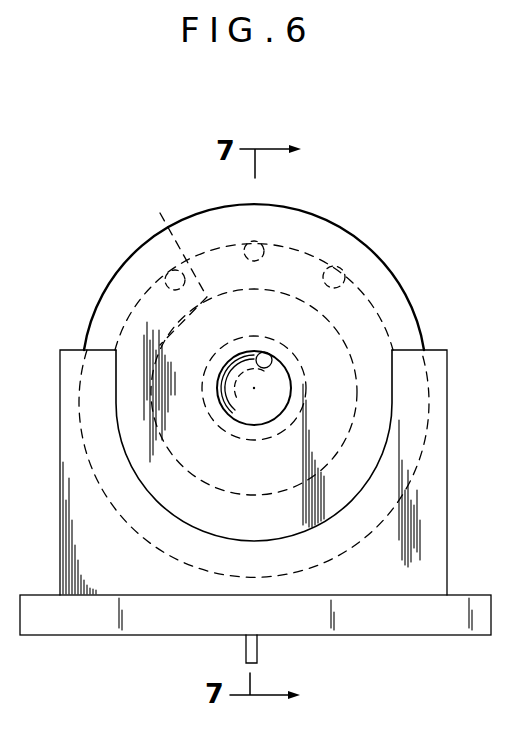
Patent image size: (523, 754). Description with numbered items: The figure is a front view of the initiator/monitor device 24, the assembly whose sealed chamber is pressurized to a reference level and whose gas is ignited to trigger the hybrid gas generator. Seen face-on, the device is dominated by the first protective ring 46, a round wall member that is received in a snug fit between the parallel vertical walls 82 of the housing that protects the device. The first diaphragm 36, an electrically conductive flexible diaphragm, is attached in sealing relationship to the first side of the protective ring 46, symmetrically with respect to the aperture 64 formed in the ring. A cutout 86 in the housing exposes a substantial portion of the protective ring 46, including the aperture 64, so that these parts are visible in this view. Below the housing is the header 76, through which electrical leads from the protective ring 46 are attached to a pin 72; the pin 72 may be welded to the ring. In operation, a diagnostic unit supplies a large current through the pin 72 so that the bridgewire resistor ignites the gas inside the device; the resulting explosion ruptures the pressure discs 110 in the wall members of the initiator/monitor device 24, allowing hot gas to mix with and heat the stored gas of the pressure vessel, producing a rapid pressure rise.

The initiator/monitor device 24 is at (386, 226).
The first diaphragm 36 is at (157, 211).
The first protective ring 46 is at (212, 213).
The aperture 64 is at (260, 352).
The pin 72 is at (258, 648).
The header 76 is at (87, 620).
The vertical wall 82 is at (100, 560).
The cutout 86 is at (117, 360).
The pressure discs 110 is at (165, 272).